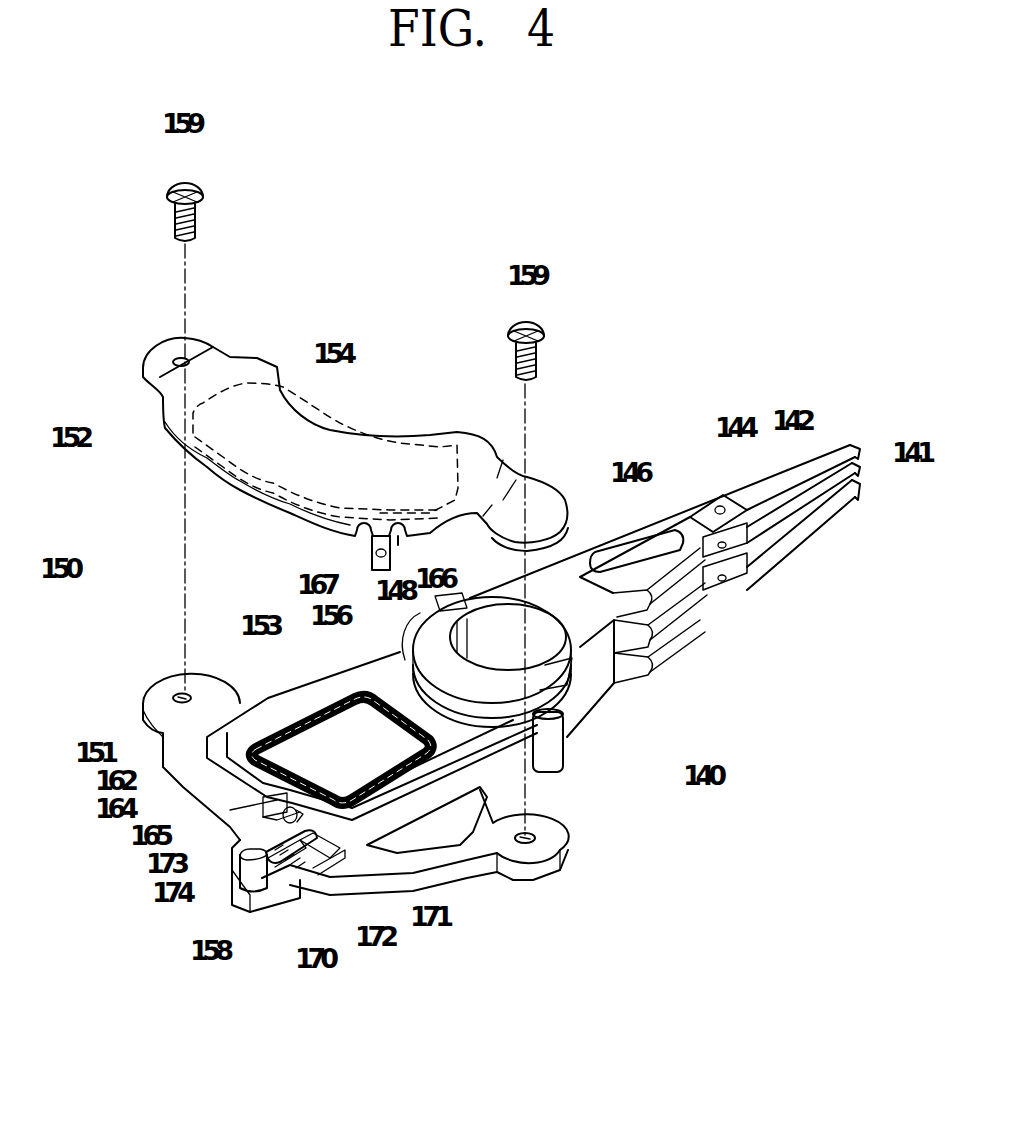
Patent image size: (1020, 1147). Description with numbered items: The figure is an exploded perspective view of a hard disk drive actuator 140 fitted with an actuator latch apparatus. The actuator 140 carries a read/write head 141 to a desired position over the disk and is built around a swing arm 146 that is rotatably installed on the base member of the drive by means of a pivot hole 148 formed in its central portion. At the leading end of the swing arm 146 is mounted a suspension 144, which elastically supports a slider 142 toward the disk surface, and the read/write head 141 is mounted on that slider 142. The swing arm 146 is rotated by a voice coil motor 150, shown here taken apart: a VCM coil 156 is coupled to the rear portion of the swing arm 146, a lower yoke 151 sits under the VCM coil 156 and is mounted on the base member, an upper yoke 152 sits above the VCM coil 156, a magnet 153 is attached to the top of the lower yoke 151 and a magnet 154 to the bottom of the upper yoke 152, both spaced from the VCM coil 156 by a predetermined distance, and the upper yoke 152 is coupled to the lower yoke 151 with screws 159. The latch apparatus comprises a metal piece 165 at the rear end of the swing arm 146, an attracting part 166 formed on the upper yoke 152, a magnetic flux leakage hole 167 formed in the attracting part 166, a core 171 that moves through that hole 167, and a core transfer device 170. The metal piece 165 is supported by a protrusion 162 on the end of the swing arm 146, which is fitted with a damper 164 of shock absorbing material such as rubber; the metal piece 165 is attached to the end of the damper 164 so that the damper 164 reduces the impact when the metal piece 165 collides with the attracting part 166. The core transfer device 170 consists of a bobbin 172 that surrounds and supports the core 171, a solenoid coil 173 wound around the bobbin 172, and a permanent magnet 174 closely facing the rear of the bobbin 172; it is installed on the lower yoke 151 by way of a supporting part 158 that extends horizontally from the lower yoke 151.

The actuator 140 is at (682, 760).
The read/write head 141 is at (857, 462).
The slider 142 is at (830, 453).
The suspension 144 is at (767, 488).
The swing arm 146 is at (636, 538).
The pivot hole 148 is at (421, 623).
The voice coil motor 150 is at (72, 582).
The lower yoke 151 is at (178, 747).
The upper yoke 152 is at (160, 402).
The magnet 153 is at (255, 700).
The magnet 154 is at (333, 440).
The VCM coil 156 is at (337, 700).
The supporting part 158 is at (247, 903).
The screws 159 is at (185, 137).
The protrusion 162 is at (258, 810).
The damper 164 is at (260, 815).
The metal piece 165 is at (262, 812).
The attracting part 166 is at (393, 552).
The magnetic flux leakage hole 167 is at (372, 568).
The core transfer device 170 is at (312, 943).
The core 171 is at (305, 848).
The bobbin 172 is at (300, 865).
The solenoid coil 173 is at (265, 838).
The permanent magnet 174 is at (243, 877).